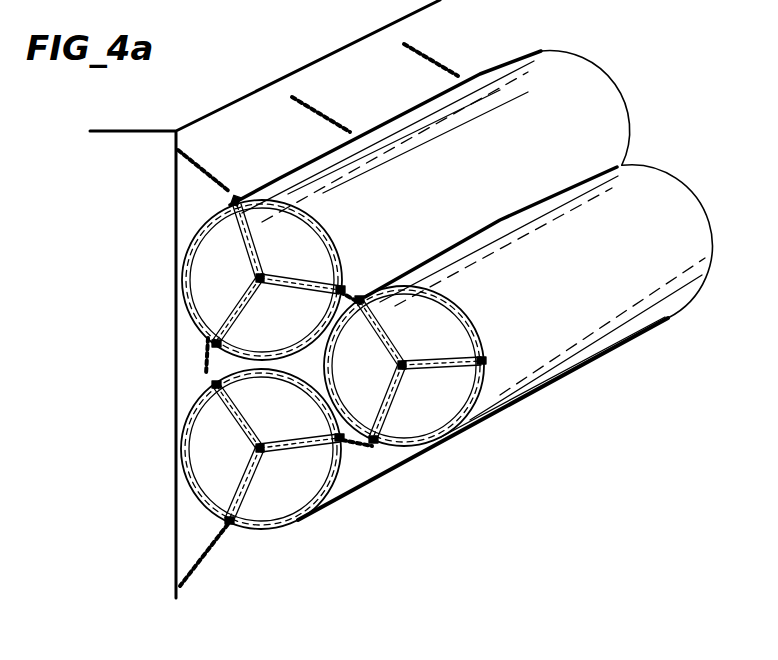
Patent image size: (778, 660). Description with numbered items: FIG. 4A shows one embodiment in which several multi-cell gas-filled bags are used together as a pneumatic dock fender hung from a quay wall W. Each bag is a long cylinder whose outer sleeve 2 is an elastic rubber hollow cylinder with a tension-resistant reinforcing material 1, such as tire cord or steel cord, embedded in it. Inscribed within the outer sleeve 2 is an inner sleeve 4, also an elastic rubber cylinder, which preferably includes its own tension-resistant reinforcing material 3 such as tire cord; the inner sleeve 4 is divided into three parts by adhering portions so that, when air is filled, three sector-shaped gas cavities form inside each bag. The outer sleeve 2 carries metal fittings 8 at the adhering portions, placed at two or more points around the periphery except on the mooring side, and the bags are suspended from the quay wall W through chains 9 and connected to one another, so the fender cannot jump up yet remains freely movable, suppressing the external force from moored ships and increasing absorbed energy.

The quay wall W is at (262, 101).
The tension-resistant reinforcing material 1 is at (337, 248).
The outer sleeve 2 is at (318, 215).
The tension-resistant reinforcing material 3 is at (235, 305).
The inner sleeve 4 is at (222, 318).
The metal fittings 8 is at (233, 191).
The chains 9 is at (320, 114).